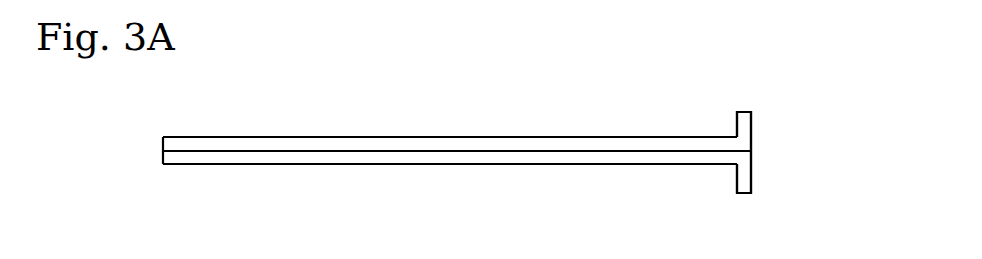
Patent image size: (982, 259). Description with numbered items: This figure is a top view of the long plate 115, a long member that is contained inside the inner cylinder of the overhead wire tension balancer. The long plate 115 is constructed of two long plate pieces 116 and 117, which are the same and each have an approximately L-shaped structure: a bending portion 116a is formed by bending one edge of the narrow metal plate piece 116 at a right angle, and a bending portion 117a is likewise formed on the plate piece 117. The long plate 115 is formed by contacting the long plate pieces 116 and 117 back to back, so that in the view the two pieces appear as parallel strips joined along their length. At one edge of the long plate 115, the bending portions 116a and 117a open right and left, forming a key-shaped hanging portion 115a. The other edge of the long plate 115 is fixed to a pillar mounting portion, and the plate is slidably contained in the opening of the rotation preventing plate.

The long plate 115 is at (325, 170).
The long plate piece 116 is at (470, 160).
The long plate piece 117 is at (502, 143).
The hanging portion 115a is at (758, 174).
The bending portion 116a is at (743, 183).
The bending portion 117a is at (743, 113).